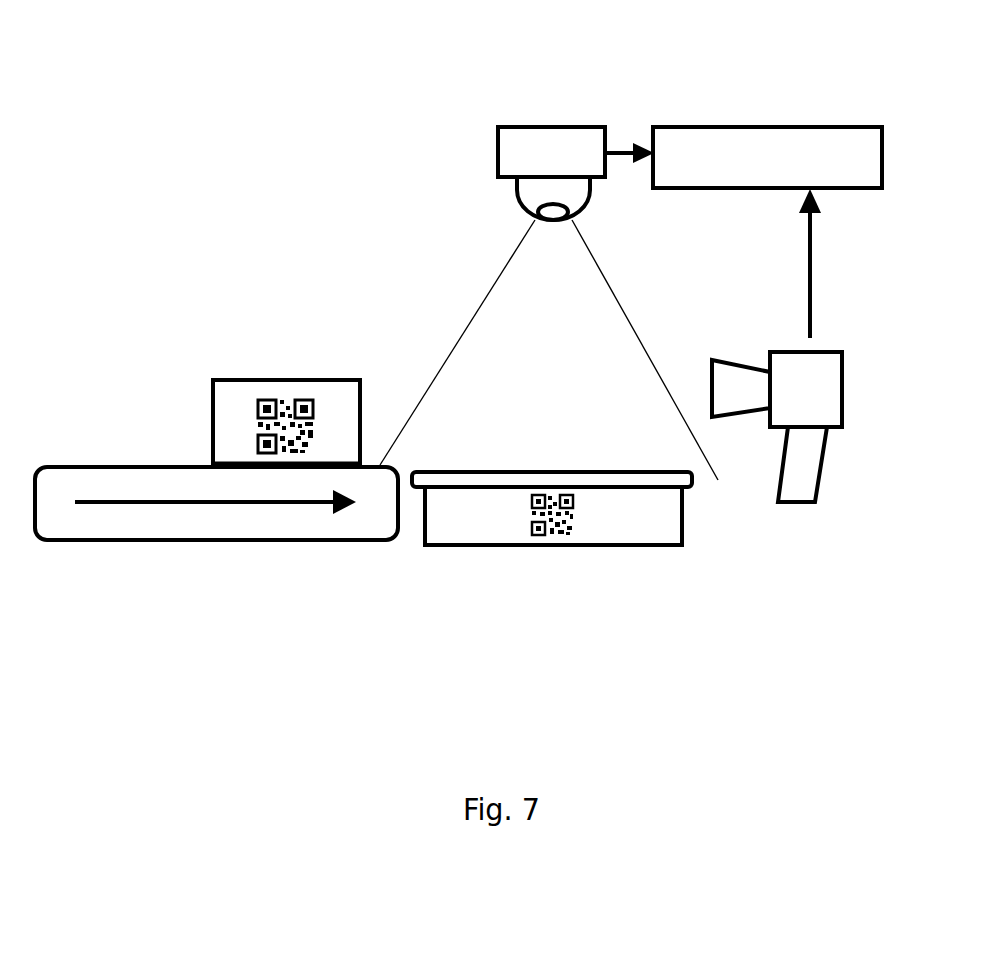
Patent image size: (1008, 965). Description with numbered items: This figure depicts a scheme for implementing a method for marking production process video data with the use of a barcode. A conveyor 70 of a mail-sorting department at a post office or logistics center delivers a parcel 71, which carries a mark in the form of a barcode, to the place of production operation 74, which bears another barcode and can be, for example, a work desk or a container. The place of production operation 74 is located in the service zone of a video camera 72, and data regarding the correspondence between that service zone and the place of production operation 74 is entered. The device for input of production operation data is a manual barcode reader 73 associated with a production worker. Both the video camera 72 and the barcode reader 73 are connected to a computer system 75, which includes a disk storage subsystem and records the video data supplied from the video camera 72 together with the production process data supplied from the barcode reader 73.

The conveyor 70 is at (145, 540).
The parcel 71 is at (282, 378).
The video camera 72 is at (515, 122).
The barcode reader 73 is at (788, 502).
The place of production operation 74 is at (453, 545).
The computer system 75 is at (805, 132).